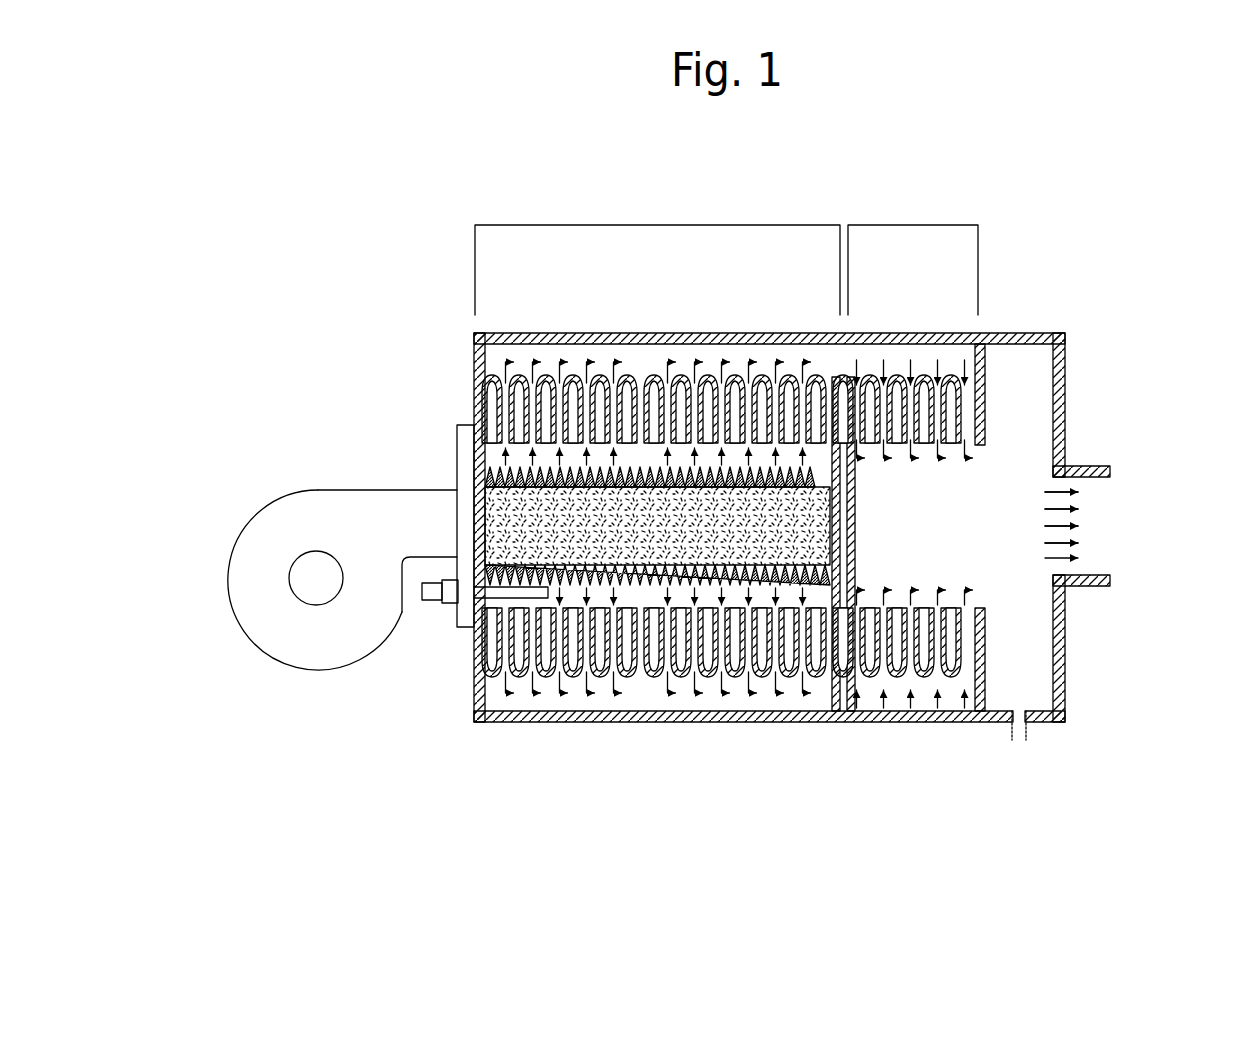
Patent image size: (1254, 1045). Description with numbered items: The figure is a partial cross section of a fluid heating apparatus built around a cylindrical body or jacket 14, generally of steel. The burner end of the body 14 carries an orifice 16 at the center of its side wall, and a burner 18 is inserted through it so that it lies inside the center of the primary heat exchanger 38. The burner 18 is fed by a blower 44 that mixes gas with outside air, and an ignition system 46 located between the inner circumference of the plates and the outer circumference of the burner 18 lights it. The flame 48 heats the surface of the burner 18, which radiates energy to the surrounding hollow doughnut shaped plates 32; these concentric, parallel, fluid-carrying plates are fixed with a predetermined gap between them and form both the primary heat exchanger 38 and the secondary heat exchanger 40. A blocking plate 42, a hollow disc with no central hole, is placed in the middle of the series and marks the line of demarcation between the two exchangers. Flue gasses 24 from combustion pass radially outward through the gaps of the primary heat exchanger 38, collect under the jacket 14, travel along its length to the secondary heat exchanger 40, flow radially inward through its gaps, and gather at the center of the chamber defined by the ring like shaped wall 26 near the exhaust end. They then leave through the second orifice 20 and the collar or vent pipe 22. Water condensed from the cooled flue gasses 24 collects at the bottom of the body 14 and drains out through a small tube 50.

The body or jacket 14 is at (1010, 333).
The orifice 16 is at (485, 487).
The burner 18 is at (487, 395).
The second orifice 20 is at (1100, 483).
The collar (vent pipe) 22 is at (1092, 588).
The flue gasses 24 is at (605, 455).
The ring like shaped wall 26 is at (990, 397).
The hollow doughnut shaped plates 32 is at (477, 712).
The primary heat exchanger 38 is at (656, 225).
The secondary heat exchanger 40 is at (913, 225).
The blocking plate 42 is at (848, 683).
The blower 44 is at (258, 508).
The ignition system 46 is at (440, 610).
The flame 48 is at (708, 450).
The small tube 50 is at (1035, 742).